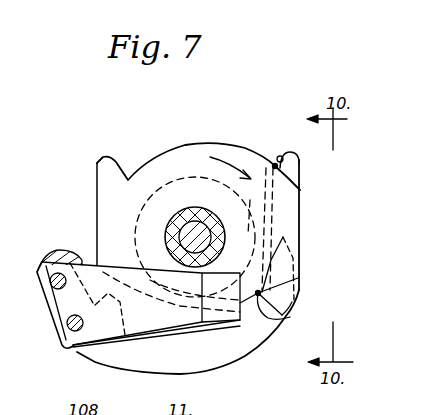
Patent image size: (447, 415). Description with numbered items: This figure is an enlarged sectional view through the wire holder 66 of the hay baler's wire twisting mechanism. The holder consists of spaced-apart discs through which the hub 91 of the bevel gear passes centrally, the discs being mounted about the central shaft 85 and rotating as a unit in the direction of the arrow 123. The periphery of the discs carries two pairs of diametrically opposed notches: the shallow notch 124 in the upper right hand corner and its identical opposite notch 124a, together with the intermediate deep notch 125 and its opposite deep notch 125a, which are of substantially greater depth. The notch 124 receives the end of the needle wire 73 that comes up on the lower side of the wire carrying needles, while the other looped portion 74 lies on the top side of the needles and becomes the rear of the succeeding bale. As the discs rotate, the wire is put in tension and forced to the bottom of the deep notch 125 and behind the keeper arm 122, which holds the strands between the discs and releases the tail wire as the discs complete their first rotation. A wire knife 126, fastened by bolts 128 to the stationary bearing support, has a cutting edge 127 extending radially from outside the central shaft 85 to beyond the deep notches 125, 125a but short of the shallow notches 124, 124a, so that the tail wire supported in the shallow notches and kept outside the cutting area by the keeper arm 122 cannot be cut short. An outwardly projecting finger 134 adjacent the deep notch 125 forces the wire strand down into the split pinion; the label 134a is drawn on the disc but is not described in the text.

The wire holder 66 is at (221, 141).
The arrow 123 is at (236, 163).
The deep notch 125a is at (128, 177).
The edge 134a is at (97, 162).
The central shaft 85 is at (192, 224).
The hub 91 is at (163, 225).
The shallow notch 124 is at (275, 166).
The looped strand portion 74 is at (299, 184).
The needle wire 73 is at (299, 279).
The outwardly projecting finger 134 is at (292, 300).
The deep notch 125 is at (286, 320).
The cutting edge 127 is at (275, 330).
The wire knife 126 is at (232, 320).
The bolts 128 is at (56, 288).
The shallow notch 124a is at (112, 347).
The keeper arm 122 is at (246, 352).